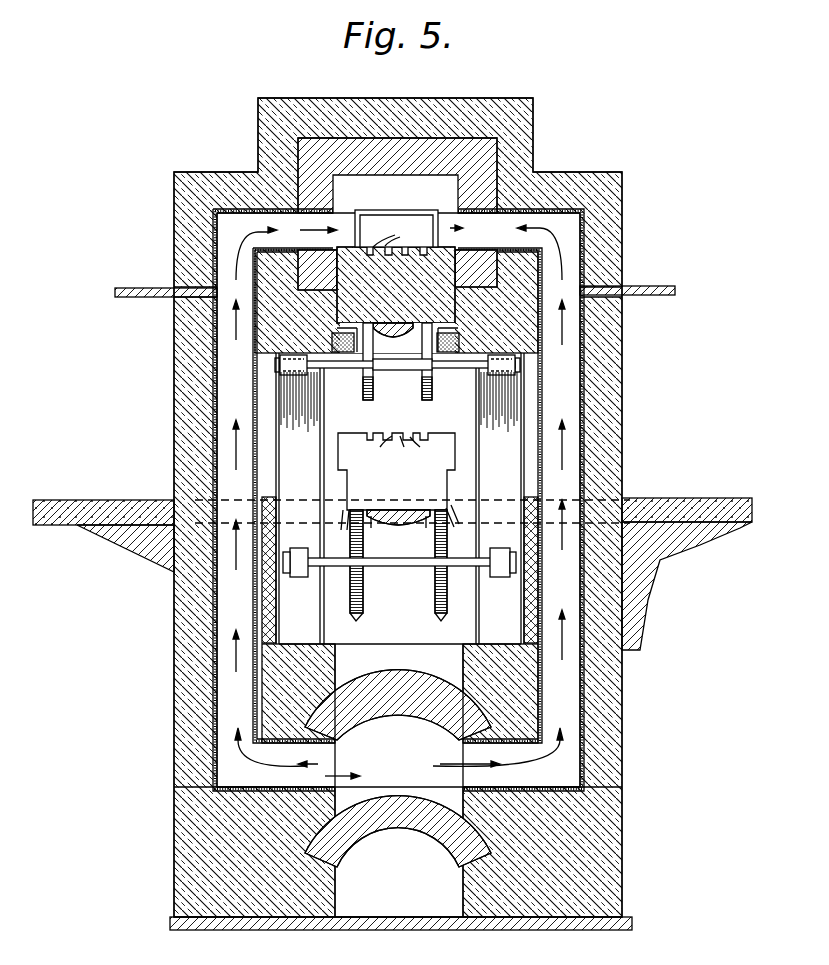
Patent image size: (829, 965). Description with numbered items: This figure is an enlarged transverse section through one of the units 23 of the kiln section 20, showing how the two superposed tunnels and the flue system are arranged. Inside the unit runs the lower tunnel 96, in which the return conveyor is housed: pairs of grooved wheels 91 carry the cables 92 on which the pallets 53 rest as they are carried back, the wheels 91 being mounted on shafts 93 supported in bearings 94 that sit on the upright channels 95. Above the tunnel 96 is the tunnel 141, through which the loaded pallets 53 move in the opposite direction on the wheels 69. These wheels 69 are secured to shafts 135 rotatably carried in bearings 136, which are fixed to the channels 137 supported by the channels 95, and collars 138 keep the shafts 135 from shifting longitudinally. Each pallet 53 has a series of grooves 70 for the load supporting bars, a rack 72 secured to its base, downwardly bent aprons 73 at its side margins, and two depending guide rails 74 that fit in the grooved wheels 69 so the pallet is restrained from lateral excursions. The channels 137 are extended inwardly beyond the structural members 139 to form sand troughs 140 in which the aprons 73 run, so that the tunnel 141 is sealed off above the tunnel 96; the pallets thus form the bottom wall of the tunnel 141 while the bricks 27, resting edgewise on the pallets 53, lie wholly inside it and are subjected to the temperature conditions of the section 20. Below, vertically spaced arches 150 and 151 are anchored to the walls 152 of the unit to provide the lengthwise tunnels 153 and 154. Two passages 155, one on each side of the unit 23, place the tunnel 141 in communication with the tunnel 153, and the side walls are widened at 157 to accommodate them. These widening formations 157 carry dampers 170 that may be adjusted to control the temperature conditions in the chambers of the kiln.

The section 20 is at (489, 97).
The unit 23 is at (533, 109).
The bricks 27 is at (372, 224).
The pallet 53 is at (445, 256).
The wheels 69 is at (363, 398).
The grooves 70 is at (396, 333).
The rack 72 is at (398, 438).
The aprons 73 is at (333, 338).
The guide rails 74 is at (371, 528).
The grooved wheels 91 is at (436, 596).
The cables 92 is at (358, 512).
The shafts 93 is at (398, 566).
The bearings 94 is at (299, 548).
The channels 95 is at (310, 626).
The tunnel 96 is at (465, 485).
The shafts 135 is at (405, 371).
The bearings 136 is at (302, 418).
The channels 137 is at (450, 318).
The collars 138 is at (280, 372).
The structural members 139 is at (232, 264).
The sand troughs 140 is at (397, 381).
The tunnel 141 is at (455, 186).
The arch 150 is at (420, 676).
The arch 151 is at (410, 798).
The walls 152 is at (330, 893).
The tunnel 153 is at (326, 776).
The tunnel 154 is at (409, 905).
The passages 155 is at (222, 472).
The widening formation 157 is at (174, 386).
The dampers 170 is at (128, 288).